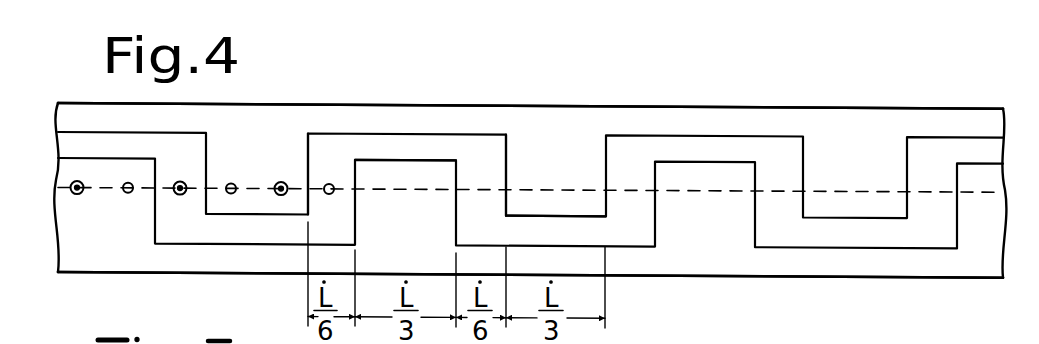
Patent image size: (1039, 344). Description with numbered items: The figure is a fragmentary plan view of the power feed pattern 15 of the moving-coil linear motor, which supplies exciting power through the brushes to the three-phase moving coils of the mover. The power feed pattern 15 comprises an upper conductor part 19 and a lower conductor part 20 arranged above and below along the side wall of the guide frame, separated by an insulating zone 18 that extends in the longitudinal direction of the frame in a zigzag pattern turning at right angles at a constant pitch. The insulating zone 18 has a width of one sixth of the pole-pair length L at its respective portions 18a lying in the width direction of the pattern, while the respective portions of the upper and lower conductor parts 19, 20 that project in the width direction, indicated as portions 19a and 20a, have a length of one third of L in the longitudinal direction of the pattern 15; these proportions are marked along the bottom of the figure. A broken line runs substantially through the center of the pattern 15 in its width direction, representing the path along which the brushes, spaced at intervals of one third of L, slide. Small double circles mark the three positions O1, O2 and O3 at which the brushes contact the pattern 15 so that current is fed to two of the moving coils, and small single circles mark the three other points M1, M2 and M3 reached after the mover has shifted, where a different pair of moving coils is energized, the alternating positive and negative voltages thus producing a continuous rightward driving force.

The power feed pattern 15 is at (742, 103).
The insulating zone 18 is at (632, 160).
The upper conductor part 19 is at (548, 118).
The lower conductor part 20 is at (636, 260).
The portions of the insulating zone lying in width direction 18a is at (348, 234).
The notch bottom edge 19a is at (585, 204).
The tooth top edge 20a is at (432, 228).
The contact position O1 is at (77, 202).
The contact point M1 is at (131, 175).
The contact position O2 is at (177, 205).
The contact point M2 is at (232, 177).
The contact position O3 is at (285, 174).
The contact point M3 is at (331, 177).